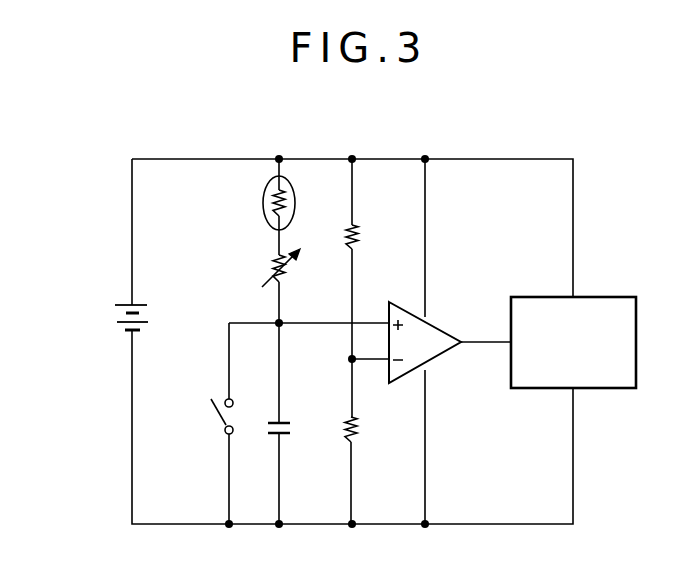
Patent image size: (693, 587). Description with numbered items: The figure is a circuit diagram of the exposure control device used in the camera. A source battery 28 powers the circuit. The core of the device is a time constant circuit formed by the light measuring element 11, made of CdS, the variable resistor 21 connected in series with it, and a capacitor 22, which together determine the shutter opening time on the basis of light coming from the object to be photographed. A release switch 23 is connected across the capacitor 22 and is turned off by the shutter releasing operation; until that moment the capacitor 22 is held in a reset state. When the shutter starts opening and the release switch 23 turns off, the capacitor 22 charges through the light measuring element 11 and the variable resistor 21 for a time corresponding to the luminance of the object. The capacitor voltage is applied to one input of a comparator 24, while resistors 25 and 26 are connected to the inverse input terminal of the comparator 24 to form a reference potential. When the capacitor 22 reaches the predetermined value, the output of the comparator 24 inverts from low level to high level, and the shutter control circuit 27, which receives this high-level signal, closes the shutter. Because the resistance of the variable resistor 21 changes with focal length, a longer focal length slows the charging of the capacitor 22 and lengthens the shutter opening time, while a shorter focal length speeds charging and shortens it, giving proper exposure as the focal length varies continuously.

The light measuring element 11 is at (264, 219).
The variable resistor 21 is at (269, 271).
The capacitor 22 is at (292, 431).
The release switch 23 is at (218, 412).
The comparator 24 is at (440, 326).
The resistor 25 is at (359, 235).
The resistor 26 is at (358, 429).
The shutter control circuit 27 is at (621, 296).
The source battery 28 is at (118, 321).